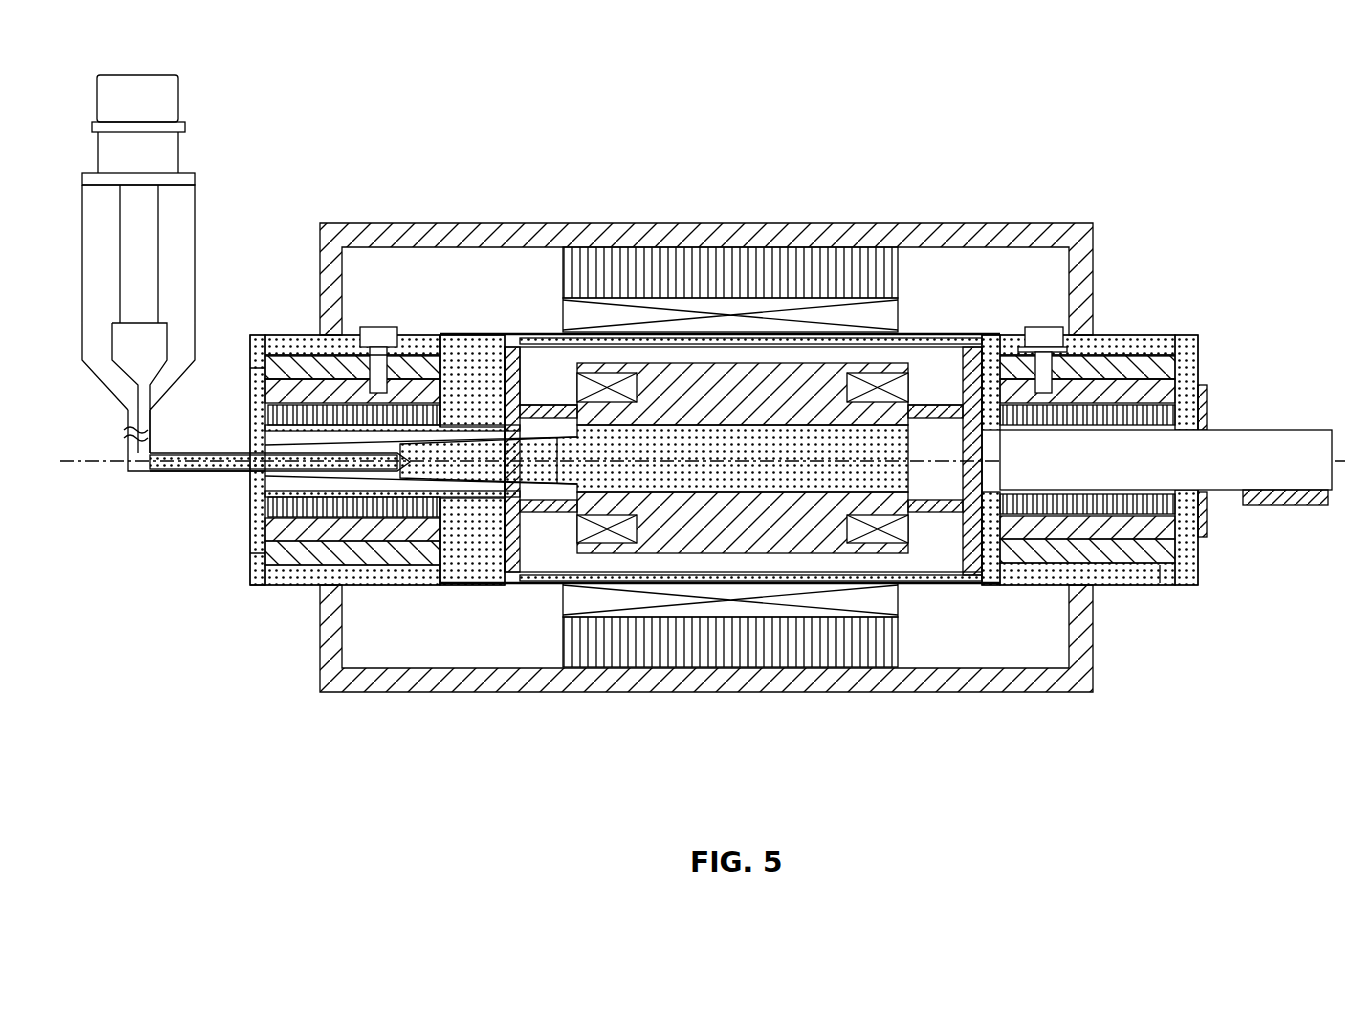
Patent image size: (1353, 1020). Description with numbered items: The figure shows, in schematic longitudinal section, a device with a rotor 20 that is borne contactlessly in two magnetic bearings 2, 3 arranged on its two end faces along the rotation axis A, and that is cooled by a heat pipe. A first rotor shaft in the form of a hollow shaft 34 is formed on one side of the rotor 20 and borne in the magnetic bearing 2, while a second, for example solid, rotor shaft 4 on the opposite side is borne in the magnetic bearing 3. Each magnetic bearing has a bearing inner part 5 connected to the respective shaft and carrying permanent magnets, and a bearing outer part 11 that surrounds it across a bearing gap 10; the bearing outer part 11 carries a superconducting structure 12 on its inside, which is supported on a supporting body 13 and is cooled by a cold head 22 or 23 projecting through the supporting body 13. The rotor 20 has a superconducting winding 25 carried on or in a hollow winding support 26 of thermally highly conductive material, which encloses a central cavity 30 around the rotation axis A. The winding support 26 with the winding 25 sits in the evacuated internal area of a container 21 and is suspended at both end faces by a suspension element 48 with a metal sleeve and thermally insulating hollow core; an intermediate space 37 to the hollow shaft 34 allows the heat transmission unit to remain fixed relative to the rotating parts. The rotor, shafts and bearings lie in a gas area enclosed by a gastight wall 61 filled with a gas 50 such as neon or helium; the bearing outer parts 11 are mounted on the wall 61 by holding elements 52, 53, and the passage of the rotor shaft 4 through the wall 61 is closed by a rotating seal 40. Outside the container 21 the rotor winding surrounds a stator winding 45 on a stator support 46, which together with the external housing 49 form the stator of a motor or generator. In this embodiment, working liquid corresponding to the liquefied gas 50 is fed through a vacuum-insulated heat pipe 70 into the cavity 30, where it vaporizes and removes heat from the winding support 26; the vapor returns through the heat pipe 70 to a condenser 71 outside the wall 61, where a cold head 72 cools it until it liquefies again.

The magnetic bearing 2 is at (300, 548).
The magnetic bearing 3 is at (1120, 553).
The rotor shaft 4 is at (1290, 445).
The bearing inner part 5 is at (1205, 415).
The bearing gap 10 is at (270, 414).
The bearing outer part 11 is at (258, 345).
The superconducting structure 12 is at (275, 380).
The supporting body 13 is at (305, 368).
The rotor 20 is at (950, 360).
The container 21 is at (540, 345).
The cold head 22 is at (380, 335).
The cold head 23 is at (1043, 333).
The winding 25 is at (605, 385).
The winding support 26 is at (748, 395).
The central cavity 30 is at (775, 490).
The hollow shaft 34 is at (510, 420).
The intermediate space 37 is at (415, 520).
The rotating seal 40 is at (1207, 505).
The stator winding 45 is at (823, 315).
The stator support 46 is at (672, 270).
The suspension element 48 is at (515, 455).
The housing 49 is at (446, 235).
The gas 50 is at (470, 470).
The holding element 52 is at (462, 350).
The holding element 53 is at (1172, 580).
The wall 61 is at (262, 577).
The heat pipe 70 is at (148, 474).
The condenser 71 is at (135, 372).
The cold head 72 is at (112, 95).
The rotation axis A is at (92, 466).